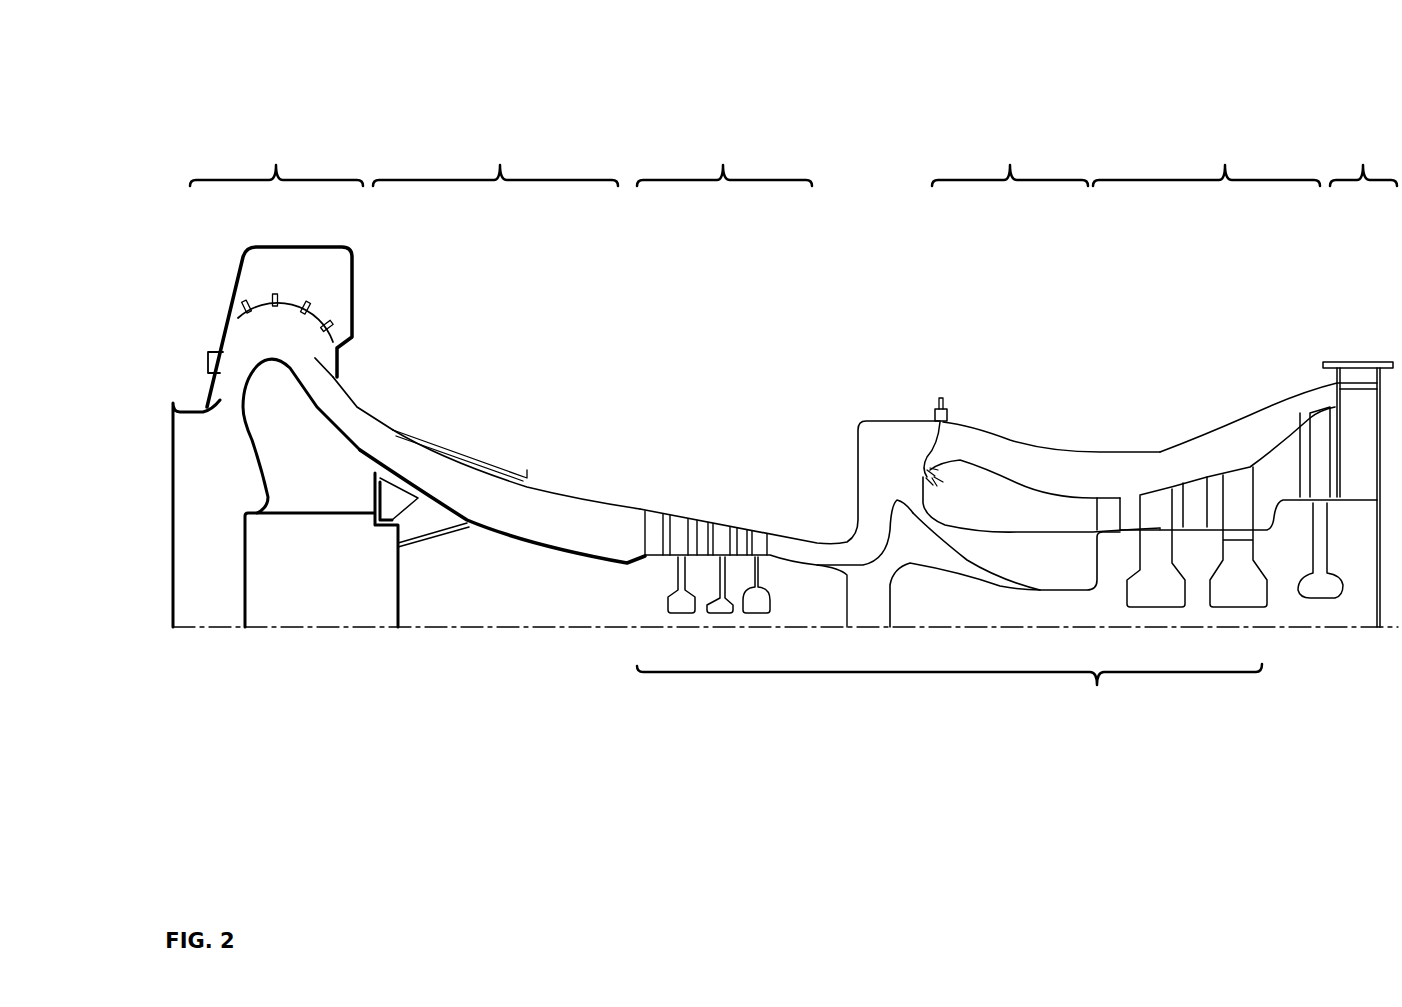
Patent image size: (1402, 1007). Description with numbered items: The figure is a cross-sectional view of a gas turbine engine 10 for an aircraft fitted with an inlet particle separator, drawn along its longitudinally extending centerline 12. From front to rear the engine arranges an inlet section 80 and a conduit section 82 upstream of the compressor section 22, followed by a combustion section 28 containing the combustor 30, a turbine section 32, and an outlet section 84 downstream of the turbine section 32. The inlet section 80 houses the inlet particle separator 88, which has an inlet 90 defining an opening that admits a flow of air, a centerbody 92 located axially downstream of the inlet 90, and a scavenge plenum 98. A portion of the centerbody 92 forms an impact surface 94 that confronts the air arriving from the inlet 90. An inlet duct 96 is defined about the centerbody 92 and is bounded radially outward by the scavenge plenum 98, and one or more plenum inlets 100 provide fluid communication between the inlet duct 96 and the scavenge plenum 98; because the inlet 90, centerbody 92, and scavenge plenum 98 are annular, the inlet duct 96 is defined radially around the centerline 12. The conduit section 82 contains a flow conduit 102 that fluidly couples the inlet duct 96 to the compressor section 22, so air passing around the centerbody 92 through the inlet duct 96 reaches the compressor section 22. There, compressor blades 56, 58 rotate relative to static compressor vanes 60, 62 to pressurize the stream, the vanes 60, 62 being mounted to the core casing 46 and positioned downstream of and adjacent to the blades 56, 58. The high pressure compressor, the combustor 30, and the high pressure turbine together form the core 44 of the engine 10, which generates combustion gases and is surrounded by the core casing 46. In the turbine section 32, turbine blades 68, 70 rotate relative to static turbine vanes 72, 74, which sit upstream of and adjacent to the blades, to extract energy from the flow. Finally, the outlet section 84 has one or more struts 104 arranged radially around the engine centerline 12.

The gas turbine engine 10 is at (293, 55).
The centerline 12 is at (328, 630).
The compressor section 22 is at (768, 383).
The combustion section 28 is at (1025, 383).
The combustor 30 is at (967, 480).
The turbine section 32 is at (1229, 373).
The core 44 is at (949, 692).
The core casing 46 is at (900, 421).
The compressor blades 56 is at (688, 537).
The compressor blades 58 is at (720, 540).
The static compressor vanes 60 is at (643, 508).
The static compressor vanes 62 is at (740, 547).
The turbine blades 68 is at (1158, 512).
The turbine blades 70 is at (1287, 483).
The static turbine vanes 72 is at (1105, 508).
The static turbine vanes 74 is at (1318, 447).
The inlet section 80 is at (252, 326).
The conduit section 82 is at (502, 351).
The outlet section 84 is at (1360, 383).
The inlet particle separator 88 is at (232, 237).
The inlet 90 is at (220, 497).
The centerbody 92 is at (278, 418).
The impact surface 94 is at (260, 463).
The inlet duct 96 is at (263, 353).
The scavenge plenum 98 is at (262, 275).
The plenum inlets 100 is at (258, 300).
The flow conduit 102 is at (418, 470).
The struts 104 is at (1358, 407).